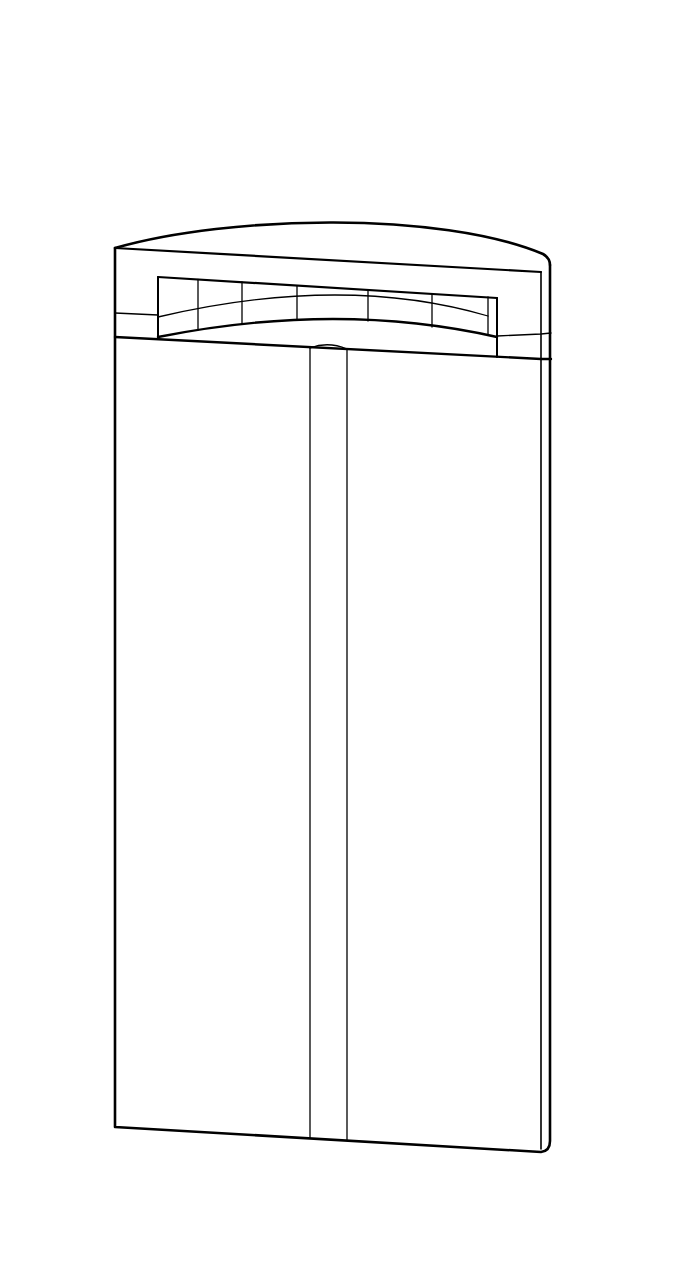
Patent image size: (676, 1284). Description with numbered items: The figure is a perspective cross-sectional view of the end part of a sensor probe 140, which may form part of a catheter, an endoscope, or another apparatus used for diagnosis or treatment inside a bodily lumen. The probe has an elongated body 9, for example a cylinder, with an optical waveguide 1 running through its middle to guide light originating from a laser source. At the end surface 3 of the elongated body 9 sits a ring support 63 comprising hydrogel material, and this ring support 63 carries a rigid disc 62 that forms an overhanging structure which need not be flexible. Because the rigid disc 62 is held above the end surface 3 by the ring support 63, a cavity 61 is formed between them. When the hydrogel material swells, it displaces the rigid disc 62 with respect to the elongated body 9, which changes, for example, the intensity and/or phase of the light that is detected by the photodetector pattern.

The sensor probe 140 is at (119, 94).
The elongated body 9 is at (123, 622).
The rigid disc 62 is at (230, 270).
The ring support 63 is at (125, 328).
The cavity 61 is at (392, 312).
The end surface 3 is at (450, 343).
The optical waveguide 1 is at (318, 597).